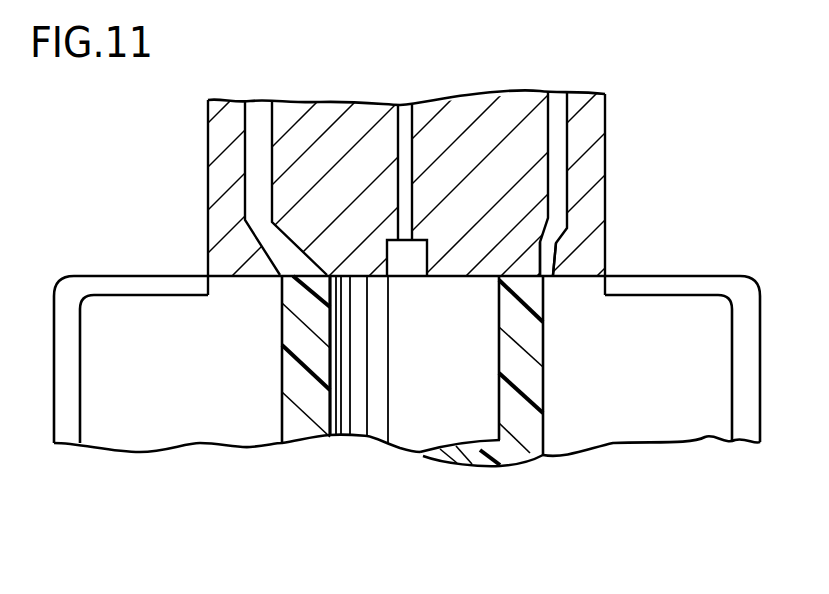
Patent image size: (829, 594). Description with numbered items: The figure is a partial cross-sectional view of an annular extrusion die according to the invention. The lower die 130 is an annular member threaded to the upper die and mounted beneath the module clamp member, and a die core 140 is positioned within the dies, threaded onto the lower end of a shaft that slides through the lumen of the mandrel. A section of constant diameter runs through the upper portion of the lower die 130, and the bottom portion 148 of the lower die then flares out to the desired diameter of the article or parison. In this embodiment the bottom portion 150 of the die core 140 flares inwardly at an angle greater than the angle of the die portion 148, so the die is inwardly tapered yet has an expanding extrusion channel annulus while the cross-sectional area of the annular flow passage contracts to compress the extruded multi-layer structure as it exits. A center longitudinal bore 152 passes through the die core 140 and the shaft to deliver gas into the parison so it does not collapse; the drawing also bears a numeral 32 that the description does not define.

The lower die 130 is at (208, 190).
The die core 140 is at (316, 103).
The bottom portion of the lower die 148 is at (555, 225).
The bottom portion of the die core 150 is at (535, 243).
The center longitudinal bore 152 is at (415, 242).
The lens 32 is at (528, 433).